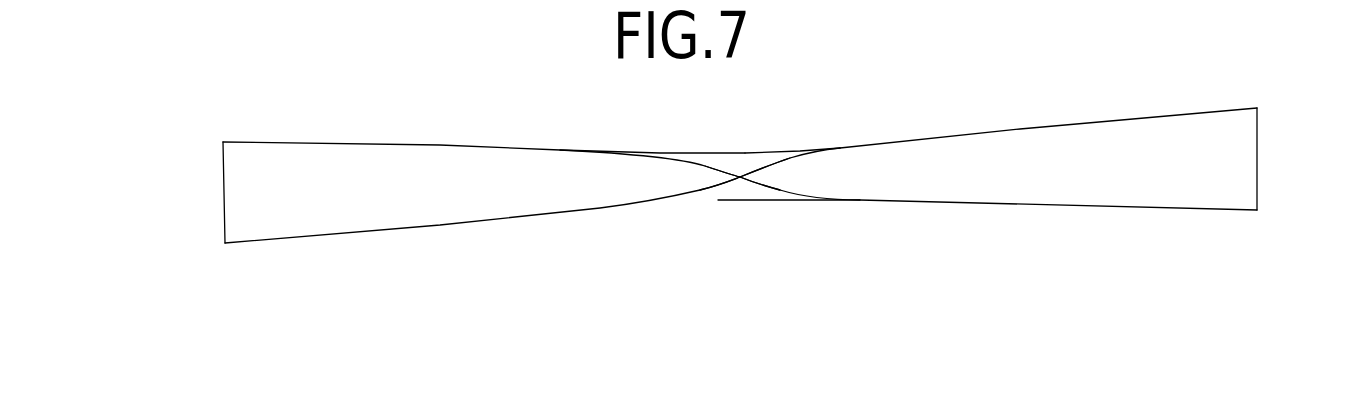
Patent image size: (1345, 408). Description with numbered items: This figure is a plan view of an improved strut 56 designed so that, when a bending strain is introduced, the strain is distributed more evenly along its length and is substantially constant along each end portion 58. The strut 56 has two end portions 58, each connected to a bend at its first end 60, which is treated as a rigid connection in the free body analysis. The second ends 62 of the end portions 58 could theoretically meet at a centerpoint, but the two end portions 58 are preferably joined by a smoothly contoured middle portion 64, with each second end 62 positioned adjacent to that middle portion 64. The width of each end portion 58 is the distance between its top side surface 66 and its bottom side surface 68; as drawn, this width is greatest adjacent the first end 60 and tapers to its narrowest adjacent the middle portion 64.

The strut 56 is at (553, 100).
The end portion 58 is at (369, 145).
The first end 60 is at (223, 212).
The second end 62 is at (740, 183).
The middle portion 64 is at (743, 152).
The top side surface 66 is at (405, 145).
The bottom side surface 68 is at (407, 231).